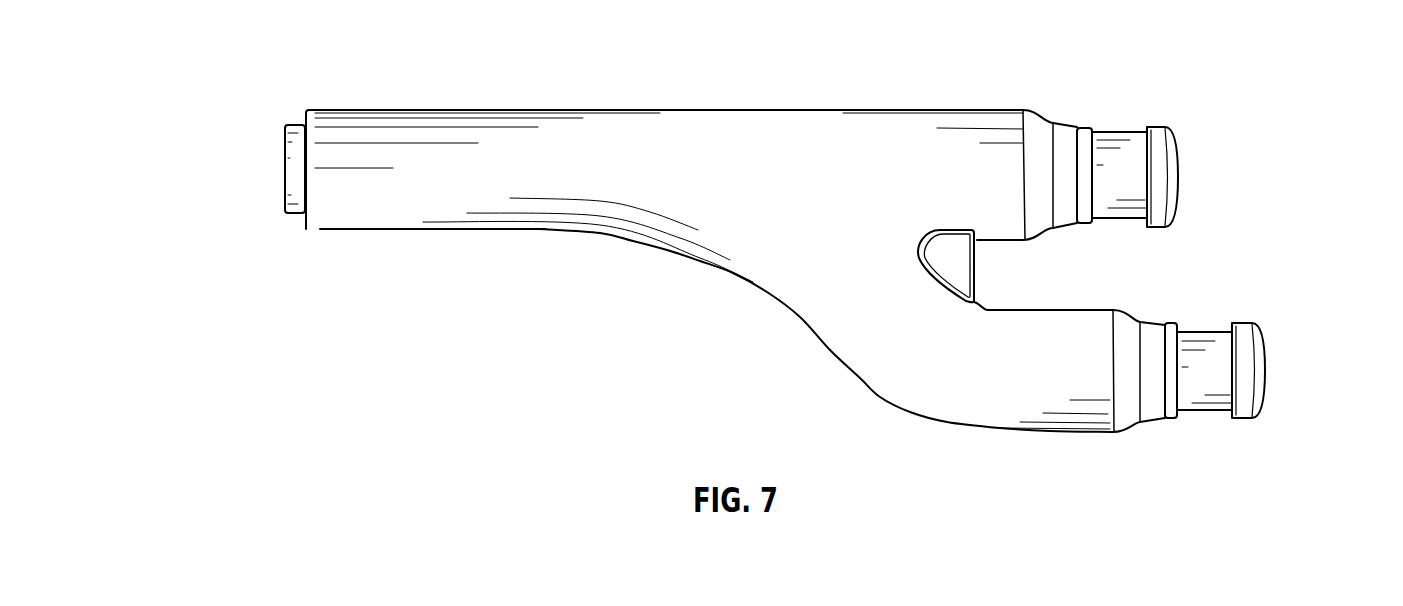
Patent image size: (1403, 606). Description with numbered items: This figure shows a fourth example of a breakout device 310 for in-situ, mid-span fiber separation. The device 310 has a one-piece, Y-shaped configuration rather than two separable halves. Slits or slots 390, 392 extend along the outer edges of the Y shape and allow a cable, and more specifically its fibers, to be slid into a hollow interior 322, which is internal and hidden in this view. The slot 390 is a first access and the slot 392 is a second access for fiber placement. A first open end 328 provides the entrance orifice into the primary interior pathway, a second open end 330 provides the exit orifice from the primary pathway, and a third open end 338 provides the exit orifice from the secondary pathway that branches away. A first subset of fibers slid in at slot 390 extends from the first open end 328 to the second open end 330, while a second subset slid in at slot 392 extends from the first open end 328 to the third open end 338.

The breakout device 310 is at (246, 46).
The hollow interior 322 is at (809, 148).
The first open end 328 is at (270, 138).
The second open end 330 is at (1203, 157).
The third open end 338 is at (1285, 365).
The slot 390 is at (468, 109).
The slot 392 is at (430, 231).